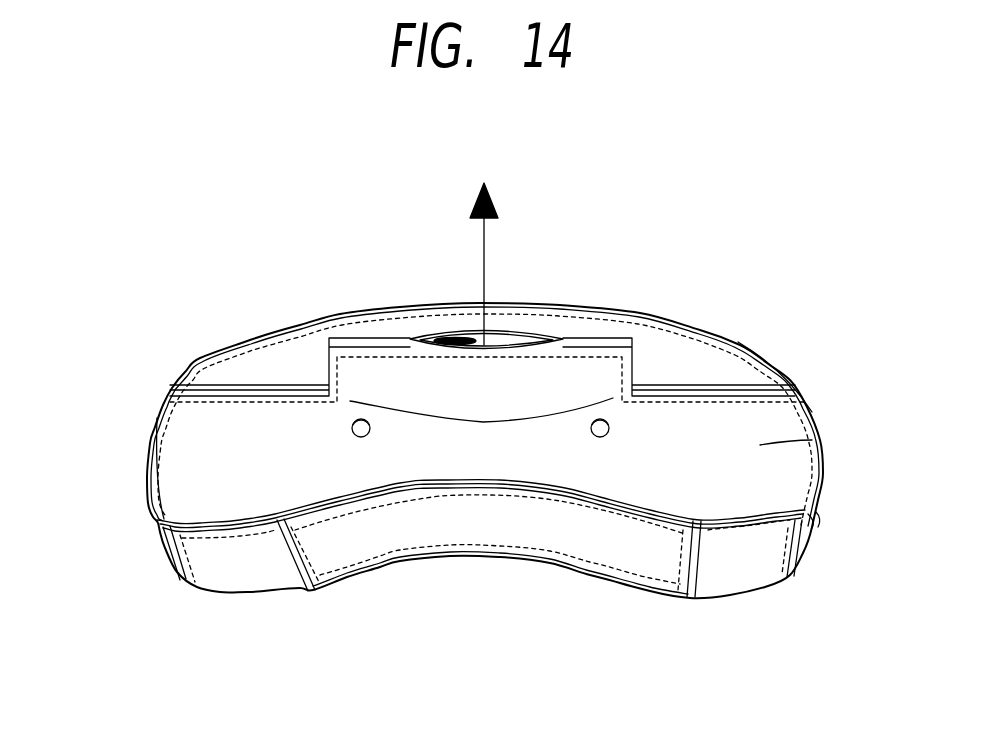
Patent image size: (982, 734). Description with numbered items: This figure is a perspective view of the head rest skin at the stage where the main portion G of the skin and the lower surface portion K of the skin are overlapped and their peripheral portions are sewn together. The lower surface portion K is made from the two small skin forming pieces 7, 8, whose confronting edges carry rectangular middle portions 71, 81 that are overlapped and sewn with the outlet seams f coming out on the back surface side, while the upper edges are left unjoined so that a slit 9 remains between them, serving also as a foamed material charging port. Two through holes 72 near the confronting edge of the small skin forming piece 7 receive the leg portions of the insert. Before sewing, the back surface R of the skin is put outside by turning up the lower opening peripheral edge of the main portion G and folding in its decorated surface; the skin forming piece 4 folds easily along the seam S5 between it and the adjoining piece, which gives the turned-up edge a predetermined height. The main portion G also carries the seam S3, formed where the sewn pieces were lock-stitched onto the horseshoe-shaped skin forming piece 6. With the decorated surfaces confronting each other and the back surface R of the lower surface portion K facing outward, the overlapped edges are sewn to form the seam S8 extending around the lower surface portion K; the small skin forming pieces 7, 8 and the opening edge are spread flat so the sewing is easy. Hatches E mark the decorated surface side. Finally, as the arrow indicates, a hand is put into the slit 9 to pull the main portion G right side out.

The small skin forming piece 8 is at (244, 360).
The lower surface portion of the skin K is at (235, 443).
The middle portion 81 is at (433, 327).
The hatches E is at (456, 335).
The slit 9 is at (517, 337).
The middle portion 71 is at (540, 372).
The back surface of the skin R is at (687, 357).
The seam S8 is at (737, 353).
The small skin forming piece 7 is at (757, 448).
The main portion of the pierced head rest skin G is at (823, 518).
The seam S3 is at (800, 562).
The outlet seam f is at (287, 567).
The horseshoe-shaped skin forming piece 6 is at (740, 577).
The skin forming piece 4 is at (405, 540).
The seam S5 is at (603, 572).
The through hole 72 is at (361, 438).